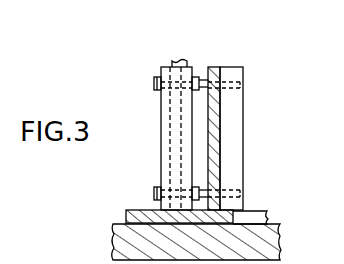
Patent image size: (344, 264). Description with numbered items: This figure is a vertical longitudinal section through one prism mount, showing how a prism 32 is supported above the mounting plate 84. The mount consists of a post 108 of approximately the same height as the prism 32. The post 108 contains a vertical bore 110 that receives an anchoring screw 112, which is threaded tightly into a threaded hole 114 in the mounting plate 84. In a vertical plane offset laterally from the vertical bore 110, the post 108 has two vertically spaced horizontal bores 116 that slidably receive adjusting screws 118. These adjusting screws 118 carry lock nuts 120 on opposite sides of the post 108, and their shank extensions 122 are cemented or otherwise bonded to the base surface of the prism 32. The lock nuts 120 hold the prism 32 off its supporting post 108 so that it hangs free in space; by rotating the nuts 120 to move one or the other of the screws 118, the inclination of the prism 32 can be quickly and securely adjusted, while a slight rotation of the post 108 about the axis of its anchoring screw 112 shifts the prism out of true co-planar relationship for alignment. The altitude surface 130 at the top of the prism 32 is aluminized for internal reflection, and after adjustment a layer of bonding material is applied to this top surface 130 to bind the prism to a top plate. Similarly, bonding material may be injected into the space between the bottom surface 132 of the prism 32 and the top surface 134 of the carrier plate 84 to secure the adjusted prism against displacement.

The prism 32 is at (246, 70).
The mounting plate 84 is at (126, 213).
The post 108 is at (161, 128).
The vertical bore 110 is at (170, 165).
The anchoring screw 112 is at (178, 61).
The threaded hole 114 is at (179, 229).
The horizontal bores 116 is at (165, 66).
The adjusting screws 118 is at (153, 84).
The lock nuts 120 is at (213, 67).
The shank extensions 122 is at (245, 84).
The altitude surface 130 is at (233, 67).
The bottom surface 132 is at (248, 193).
The top surface 134 is at (250, 209).